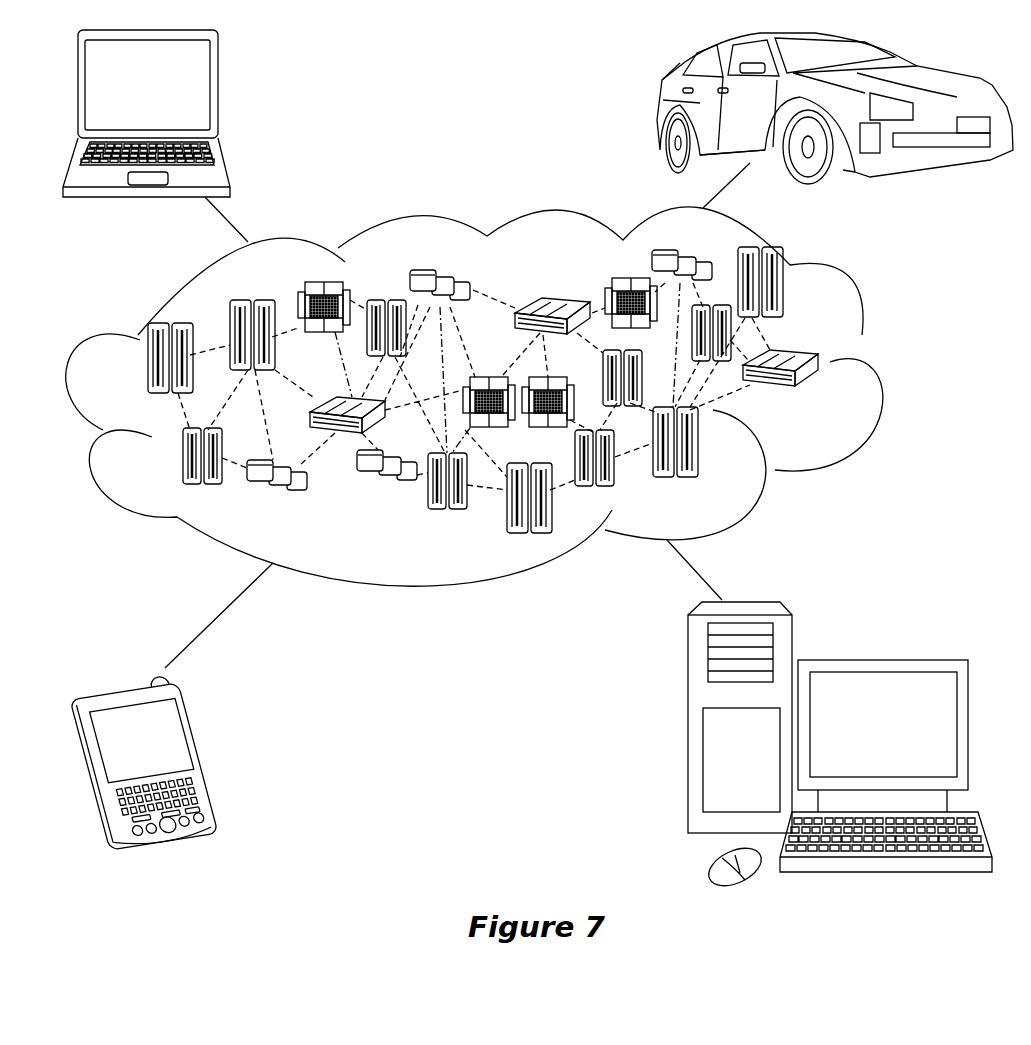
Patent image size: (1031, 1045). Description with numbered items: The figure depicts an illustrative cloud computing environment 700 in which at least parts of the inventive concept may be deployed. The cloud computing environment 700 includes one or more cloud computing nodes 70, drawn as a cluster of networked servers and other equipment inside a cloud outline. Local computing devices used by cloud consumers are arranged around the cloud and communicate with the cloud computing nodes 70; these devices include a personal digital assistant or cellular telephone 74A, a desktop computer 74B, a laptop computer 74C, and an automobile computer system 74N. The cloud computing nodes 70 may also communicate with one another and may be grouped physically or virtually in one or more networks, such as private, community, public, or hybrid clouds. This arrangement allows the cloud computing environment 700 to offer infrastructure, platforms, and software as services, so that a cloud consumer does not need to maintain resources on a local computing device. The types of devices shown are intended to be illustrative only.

The cloud computing nodes 70 is at (880, 370).
The cloud computing environment 700 is at (822, 398).
The personal digital assistant (PDA) or cellular telephone 74A is at (207, 755).
The desktop computer 74B is at (878, 660).
The laptop computer 74C is at (220, 90).
The automobile computer system 74N is at (660, 108).